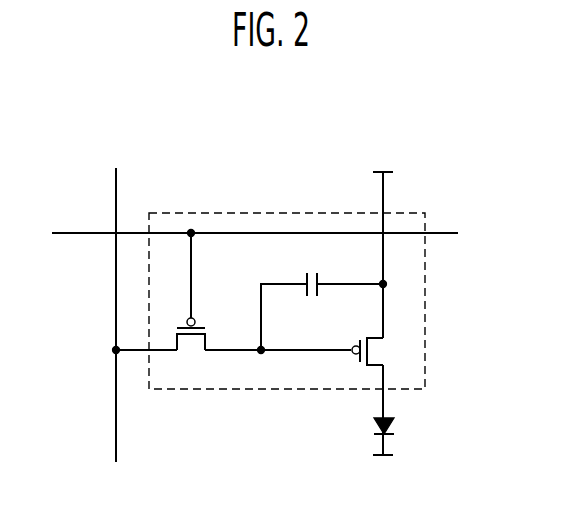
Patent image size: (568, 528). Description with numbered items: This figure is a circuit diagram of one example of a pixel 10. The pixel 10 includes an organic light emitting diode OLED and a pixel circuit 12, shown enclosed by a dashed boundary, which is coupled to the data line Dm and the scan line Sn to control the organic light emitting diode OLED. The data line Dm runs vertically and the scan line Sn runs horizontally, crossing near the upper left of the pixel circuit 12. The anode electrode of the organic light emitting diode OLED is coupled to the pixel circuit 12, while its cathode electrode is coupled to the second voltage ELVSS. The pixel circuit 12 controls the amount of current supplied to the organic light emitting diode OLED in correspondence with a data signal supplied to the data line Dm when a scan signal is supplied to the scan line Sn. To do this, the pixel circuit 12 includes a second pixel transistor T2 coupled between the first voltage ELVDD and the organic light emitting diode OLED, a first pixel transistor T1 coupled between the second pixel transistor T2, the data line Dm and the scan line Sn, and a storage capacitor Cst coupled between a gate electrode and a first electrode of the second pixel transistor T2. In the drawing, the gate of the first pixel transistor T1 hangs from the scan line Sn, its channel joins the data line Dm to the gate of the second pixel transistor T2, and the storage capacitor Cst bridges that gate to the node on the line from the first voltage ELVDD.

The pixel 10 is at (199, 135).
The pixel circuit 12 is at (427, 279).
The data line Dm is at (118, 172).
The scan line Sn is at (62, 236).
The first voltage ELVDD is at (382, 242).
The second voltage ELVSS is at (383, 471).
The first pixel transistor T1 is at (188, 303).
The second pixel transistor T2 is at (330, 351).
The storage capacitor Cst is at (322, 311).
The organic light emitting diode OLED is at (360, 410).